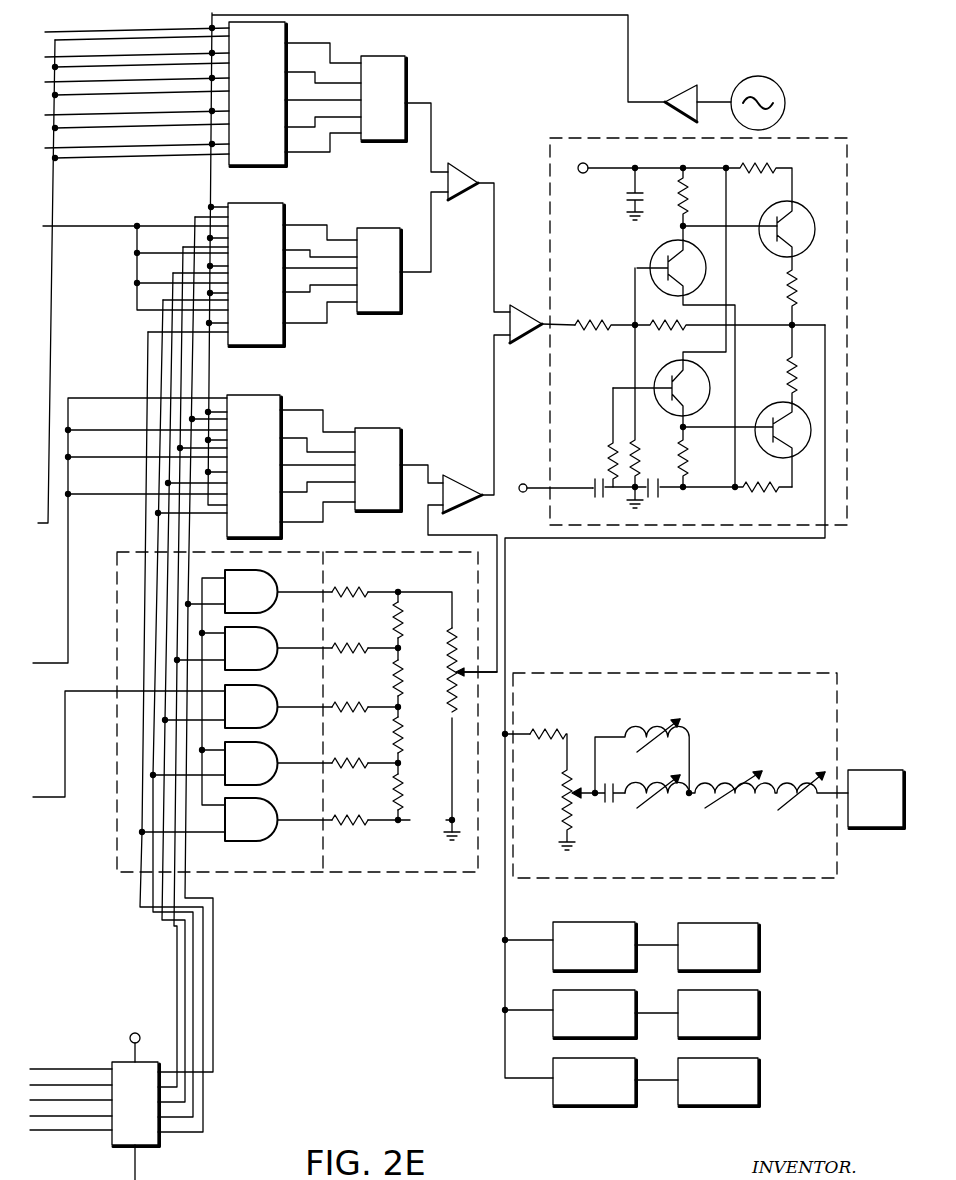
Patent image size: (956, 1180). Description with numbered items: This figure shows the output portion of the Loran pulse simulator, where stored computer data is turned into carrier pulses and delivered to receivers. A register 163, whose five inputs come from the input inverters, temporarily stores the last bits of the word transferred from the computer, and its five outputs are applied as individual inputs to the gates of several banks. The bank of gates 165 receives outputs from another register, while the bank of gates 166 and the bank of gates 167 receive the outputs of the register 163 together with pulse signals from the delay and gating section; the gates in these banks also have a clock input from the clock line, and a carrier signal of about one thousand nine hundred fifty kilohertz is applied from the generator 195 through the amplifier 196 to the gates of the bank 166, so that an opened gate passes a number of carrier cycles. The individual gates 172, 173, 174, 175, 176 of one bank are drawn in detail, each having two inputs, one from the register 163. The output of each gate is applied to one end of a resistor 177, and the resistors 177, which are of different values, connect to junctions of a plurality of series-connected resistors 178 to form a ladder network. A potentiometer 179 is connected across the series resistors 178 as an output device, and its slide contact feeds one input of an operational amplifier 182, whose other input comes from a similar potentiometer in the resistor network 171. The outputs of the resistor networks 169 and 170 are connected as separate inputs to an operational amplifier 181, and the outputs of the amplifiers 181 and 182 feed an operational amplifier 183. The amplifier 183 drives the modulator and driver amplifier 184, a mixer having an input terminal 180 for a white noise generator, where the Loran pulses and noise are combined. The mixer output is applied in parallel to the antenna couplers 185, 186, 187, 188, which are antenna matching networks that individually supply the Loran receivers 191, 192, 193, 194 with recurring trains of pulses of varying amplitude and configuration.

The register 163 is at (112, 1060).
The bank of gates 165 is at (288, 50).
The bank of gates 166 is at (274, 218).
The bank of gates 167 is at (273, 412).
The resistor network 169 is at (397, 97).
The resistor network 170 is at (395, 240).
The resistor network 171 is at (394, 443).
The gate 172 is at (266, 591).
The gate 173 is at (266, 650).
The gate 174 is at (263, 703).
The gate 175 is at (263, 759).
The gate 176 is at (263, 814).
The resistor 177 is at (355, 591).
The resistor 178 is at (408, 624).
The potentiometer 179 is at (472, 592).
The input terminal 180 is at (520, 486).
The operational amplifier 181 is at (464, 184).
The operational amplifier 182 is at (458, 492).
The operational amplifier 183 is at (524, 322).
The modulator and driver amplifier 184 is at (598, 118).
The antenna coupler 185 is at (630, 658).
The antenna coupler 186 is at (594, 912).
The antenna coupler 187 is at (553, 1000).
The antenna coupler 188 is at (553, 1068).
The Loran receiver 191 is at (896, 780).
The Loran receiver 192 is at (719, 912).
The Loran receiver 193 is at (758, 1012).
The Loran receiver 194 is at (758, 1082).
The generator 195 is at (776, 110).
The amplifier 196 is at (674, 98).